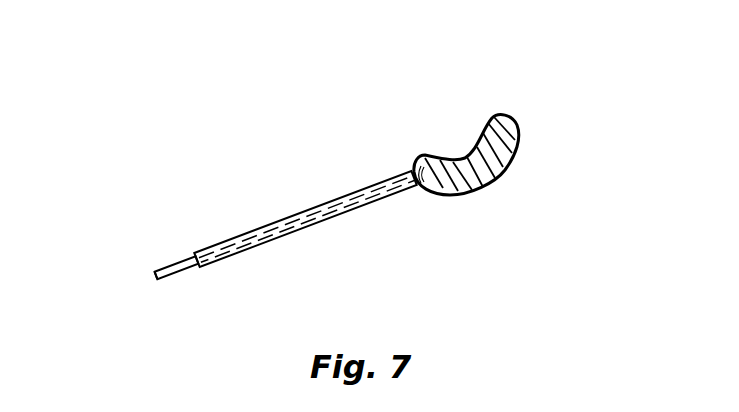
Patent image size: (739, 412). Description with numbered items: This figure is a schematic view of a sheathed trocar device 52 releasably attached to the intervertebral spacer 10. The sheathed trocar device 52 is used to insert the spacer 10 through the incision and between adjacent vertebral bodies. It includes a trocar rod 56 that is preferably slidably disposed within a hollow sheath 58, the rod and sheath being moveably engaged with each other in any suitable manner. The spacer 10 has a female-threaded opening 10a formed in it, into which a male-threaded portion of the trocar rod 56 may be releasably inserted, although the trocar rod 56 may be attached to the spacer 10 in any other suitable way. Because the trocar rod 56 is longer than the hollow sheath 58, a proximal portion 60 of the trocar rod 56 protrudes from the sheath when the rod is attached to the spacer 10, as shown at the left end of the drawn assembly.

The intervertebral spacer 10 is at (532, 145).
The female-threaded opening 10a is at (412, 167).
The sheathed trocar device 52 is at (208, 205).
The trocar rod 56 is at (166, 258).
The hollow sheath 58 is at (262, 226).
The proximal portion 60 is at (177, 279).